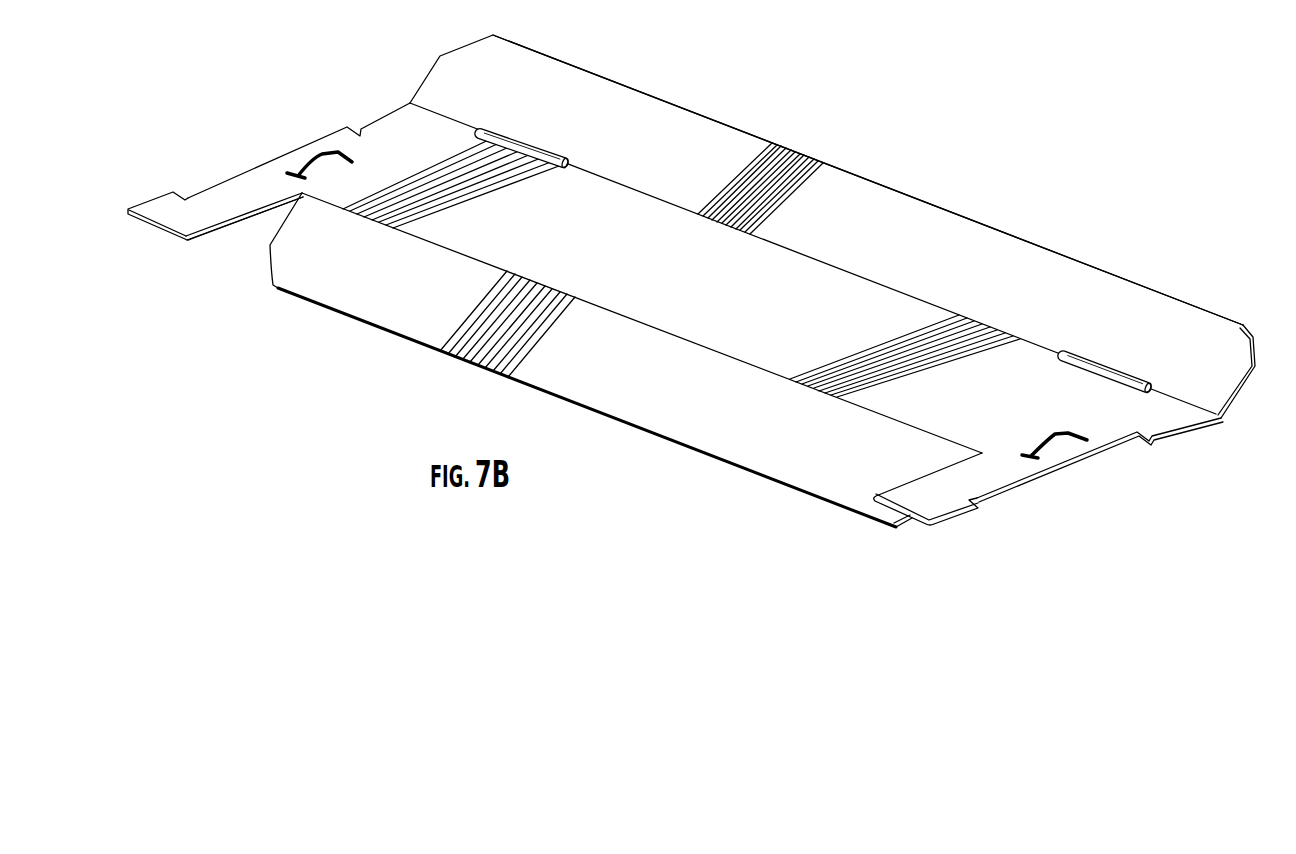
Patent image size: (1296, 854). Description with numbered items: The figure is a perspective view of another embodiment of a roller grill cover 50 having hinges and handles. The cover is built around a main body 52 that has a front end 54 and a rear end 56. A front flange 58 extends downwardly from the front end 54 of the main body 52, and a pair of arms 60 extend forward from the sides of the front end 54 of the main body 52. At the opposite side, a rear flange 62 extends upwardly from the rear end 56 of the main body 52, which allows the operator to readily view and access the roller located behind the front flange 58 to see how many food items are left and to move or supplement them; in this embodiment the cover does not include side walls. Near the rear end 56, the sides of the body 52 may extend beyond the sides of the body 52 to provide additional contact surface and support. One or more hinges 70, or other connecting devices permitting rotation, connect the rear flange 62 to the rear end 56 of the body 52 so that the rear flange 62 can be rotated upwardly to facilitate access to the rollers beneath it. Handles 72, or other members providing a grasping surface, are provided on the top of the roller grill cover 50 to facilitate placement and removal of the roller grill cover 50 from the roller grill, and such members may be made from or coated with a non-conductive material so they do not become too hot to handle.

The roller grill cover 50 is at (1066, 162).
The main body 52 is at (1087, 421).
The front end 54 is at (697, 347).
The rear end 56 is at (648, 197).
The front flange 58 is at (782, 428).
The arms 60 is at (932, 500).
The rear flange 62 is at (892, 243).
The hinges 70 is at (518, 148).
The handles 72 is at (315, 160).